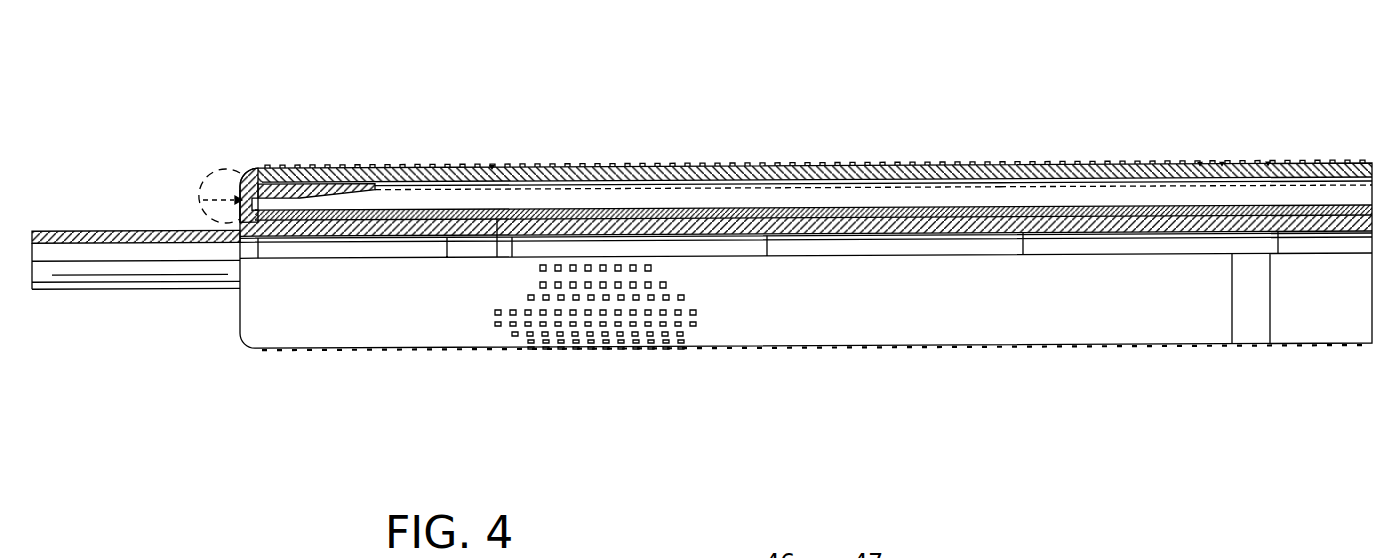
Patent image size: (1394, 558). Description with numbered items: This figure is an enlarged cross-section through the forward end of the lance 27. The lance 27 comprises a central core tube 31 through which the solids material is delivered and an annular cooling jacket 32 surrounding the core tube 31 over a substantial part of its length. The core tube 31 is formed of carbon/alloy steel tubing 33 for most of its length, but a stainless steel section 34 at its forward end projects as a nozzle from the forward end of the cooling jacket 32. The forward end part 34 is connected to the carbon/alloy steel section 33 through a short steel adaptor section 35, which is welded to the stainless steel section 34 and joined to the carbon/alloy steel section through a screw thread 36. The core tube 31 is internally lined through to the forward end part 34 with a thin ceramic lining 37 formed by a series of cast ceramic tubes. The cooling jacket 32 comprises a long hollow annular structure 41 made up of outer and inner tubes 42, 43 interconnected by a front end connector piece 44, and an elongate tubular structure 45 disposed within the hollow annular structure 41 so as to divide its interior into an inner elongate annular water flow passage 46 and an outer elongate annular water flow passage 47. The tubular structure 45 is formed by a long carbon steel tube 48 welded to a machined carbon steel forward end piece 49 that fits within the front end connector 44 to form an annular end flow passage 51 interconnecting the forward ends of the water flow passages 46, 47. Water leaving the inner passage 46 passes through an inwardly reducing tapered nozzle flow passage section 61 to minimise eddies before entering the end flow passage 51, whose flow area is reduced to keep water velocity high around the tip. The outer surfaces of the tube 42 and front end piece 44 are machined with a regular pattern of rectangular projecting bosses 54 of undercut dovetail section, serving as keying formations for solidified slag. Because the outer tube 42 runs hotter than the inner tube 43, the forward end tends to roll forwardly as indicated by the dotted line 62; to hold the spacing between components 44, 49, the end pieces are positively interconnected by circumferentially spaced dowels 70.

The lance 27 is at (593, 143).
The central core tube 31 is at (800, 220).
The annular cooling jacket 32 is at (717, 164).
The carbon/alloy steel tubing 33 is at (1040, 223).
The stainless steel section 34 is at (113, 232).
The steel adaptor section 35 is at (447, 238).
The screw thread 36 is at (496, 238).
The ceramic lining 37 is at (392, 238).
The hollow annular structure 41 is at (1080, 164).
The outer tube 42 is at (957, 165).
The inner tube 43 is at (1015, 207).
The front end connector piece 44 is at (278, 166).
The elongate tubular structure 45 is at (770, 186).
The inner elongate annular water flow passage 46 is at (887, 198).
The outer elongate annular water flow passage 47 is at (675, 180).
The carbon steel tube 48 is at (1196, 185).
The forward end piece 49 is at (298, 195).
The annular end flow passage 51 is at (203, 200).
The rectangular projecting bosses 54 is at (429, 180).
The tapered nozzle flow passage section 61 is at (365, 180).
The dotted line 62 is at (215, 172).
The dowels 70 is at (257, 170).